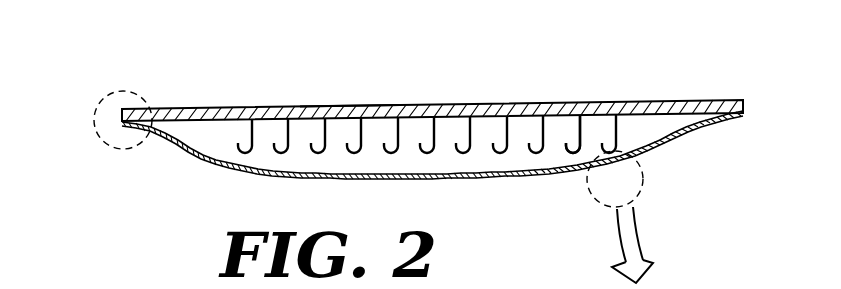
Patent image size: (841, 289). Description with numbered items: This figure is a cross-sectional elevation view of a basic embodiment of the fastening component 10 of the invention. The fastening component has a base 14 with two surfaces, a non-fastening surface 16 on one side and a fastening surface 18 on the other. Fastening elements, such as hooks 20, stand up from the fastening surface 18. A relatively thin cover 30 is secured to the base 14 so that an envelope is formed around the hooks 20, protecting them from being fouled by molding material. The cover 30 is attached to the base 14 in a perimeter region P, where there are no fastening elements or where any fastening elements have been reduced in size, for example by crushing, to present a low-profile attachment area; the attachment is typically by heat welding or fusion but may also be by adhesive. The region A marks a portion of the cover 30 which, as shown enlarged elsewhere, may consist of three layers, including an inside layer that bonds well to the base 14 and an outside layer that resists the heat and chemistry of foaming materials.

The fastening component 10 is at (643, 78).
The base 14 is at (458, 106).
The non-fastening surface 16 is at (351, 106).
The fastening surface 18 is at (407, 122).
The hooks 20 is at (579, 125).
The cover 30 is at (283, 178).
The perimeter region P is at (98, 113).
The region A is at (596, 204).